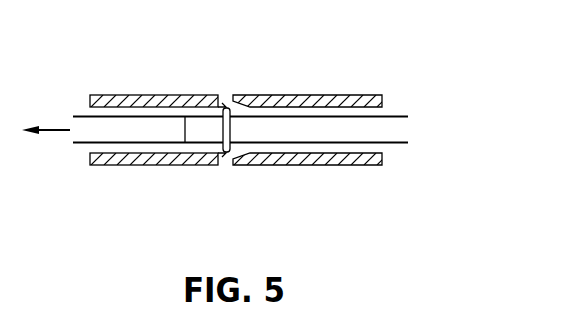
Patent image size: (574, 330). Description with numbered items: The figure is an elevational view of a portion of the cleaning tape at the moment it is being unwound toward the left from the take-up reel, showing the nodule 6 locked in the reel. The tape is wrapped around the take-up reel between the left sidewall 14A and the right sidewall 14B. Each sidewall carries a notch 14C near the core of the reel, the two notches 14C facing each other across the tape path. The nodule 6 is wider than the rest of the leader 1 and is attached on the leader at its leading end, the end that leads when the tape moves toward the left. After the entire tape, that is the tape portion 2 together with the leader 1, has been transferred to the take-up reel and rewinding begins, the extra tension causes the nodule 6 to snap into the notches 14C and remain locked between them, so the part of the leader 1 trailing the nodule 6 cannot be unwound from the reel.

The leader 1 is at (234, 134).
The tape portion 2 is at (85, 132).
The nodule 6 is at (229, 108).
The left sidewall 14A is at (357, 100).
The right sidewall 14B is at (298, 165).
The notches 14C is at (226, 107).